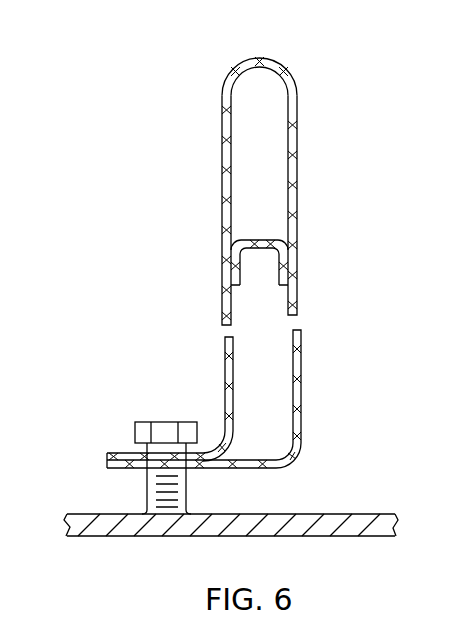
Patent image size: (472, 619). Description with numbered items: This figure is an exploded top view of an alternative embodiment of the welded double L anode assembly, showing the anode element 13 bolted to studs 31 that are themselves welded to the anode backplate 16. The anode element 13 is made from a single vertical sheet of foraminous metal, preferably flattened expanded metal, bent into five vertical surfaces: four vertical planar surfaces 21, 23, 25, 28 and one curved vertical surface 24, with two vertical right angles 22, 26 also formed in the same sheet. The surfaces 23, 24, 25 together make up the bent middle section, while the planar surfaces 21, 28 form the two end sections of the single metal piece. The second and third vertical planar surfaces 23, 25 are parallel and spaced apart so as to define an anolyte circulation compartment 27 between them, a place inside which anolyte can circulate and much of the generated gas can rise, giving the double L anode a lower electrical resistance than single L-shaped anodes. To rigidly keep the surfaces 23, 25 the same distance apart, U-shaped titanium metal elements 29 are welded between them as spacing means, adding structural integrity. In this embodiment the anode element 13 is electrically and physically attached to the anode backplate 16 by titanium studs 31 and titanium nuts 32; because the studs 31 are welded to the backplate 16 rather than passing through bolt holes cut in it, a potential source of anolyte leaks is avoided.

The anode element 13 is at (274, 38).
The anode backplate 16 is at (260, 537).
The vertical planar surface 21 is at (122, 470).
The vertical right angle 22 is at (299, 450).
The second vertical planar surface 23 is at (302, 347).
The curved vertical surface 24 is at (258, 56).
The third vertical planar surface 25 is at (226, 362).
The vertical right angle 26 is at (223, 445).
The anolyte circulation compartment 27 is at (263, 120).
The vertical planar surface 28 is at (122, 453).
The U-shaped titanium metal element 29 is at (262, 238).
The stud 31 is at (188, 493).
The nut 32 is at (148, 421).